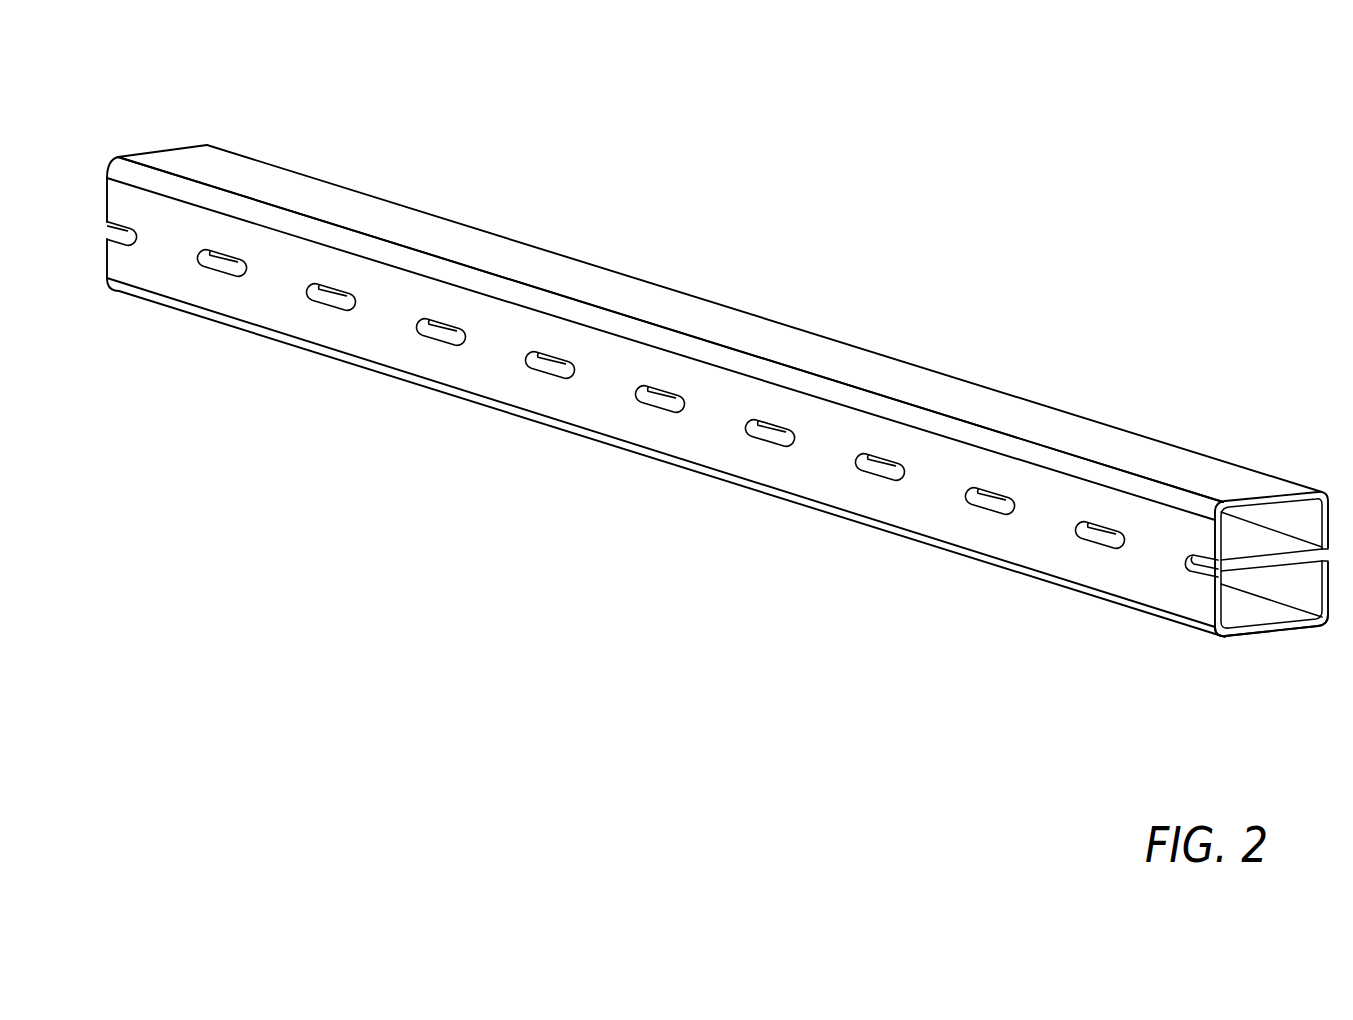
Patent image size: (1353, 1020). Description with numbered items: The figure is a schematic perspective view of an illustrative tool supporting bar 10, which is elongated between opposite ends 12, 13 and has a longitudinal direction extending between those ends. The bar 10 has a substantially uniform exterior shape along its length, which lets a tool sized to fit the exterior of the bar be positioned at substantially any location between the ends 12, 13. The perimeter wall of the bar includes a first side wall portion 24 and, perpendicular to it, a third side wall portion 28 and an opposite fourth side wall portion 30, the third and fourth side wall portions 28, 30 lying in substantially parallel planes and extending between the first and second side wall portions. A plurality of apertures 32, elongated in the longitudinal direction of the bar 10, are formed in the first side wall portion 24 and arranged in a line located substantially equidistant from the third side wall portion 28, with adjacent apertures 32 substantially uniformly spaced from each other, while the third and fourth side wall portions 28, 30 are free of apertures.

The bar 10 is at (877, 352).
The end 12 is at (1310, 645).
The end 13 is at (227, 150).
The first side wall portion 24 is at (1198, 592).
The third side wall portion 28 is at (1175, 467).
The fourth side wall portion 30 is at (1255, 637).
The apertures 32 is at (1100, 547).